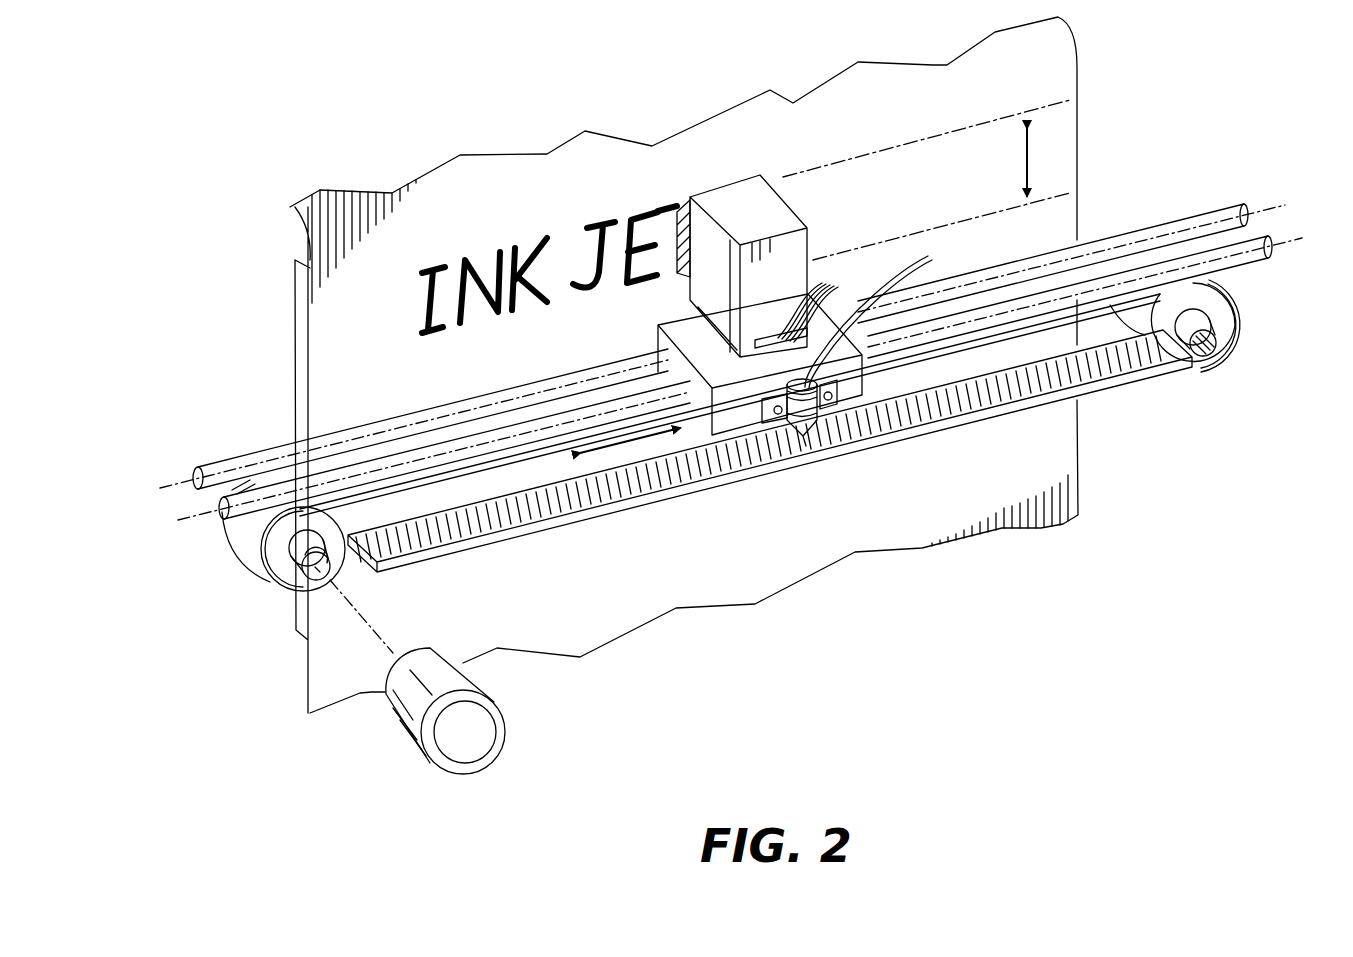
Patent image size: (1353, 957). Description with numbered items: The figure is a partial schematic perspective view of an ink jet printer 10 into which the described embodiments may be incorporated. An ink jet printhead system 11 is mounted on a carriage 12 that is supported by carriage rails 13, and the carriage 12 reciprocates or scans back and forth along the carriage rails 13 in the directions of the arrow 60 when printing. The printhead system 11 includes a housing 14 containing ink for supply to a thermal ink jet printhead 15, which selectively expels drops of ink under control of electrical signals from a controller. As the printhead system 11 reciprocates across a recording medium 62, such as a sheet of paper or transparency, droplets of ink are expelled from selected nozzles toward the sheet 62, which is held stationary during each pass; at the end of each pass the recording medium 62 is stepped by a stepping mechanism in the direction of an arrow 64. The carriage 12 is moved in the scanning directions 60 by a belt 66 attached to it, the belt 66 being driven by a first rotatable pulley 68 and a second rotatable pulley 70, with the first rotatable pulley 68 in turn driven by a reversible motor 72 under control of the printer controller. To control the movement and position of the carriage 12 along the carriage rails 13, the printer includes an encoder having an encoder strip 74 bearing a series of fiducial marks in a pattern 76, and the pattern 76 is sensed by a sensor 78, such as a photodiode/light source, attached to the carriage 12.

The ink jet printer 10 is at (372, 130).
The ink jet printhead system 11 is at (793, 198).
The carriage 12 is at (683, 323).
The carriage rails 13 is at (378, 468).
The housing 14 is at (740, 190).
The thermal ink jet printhead 15 is at (686, 206).
The arrow (scanning directions) 60 is at (637, 450).
The recording medium 62 is at (485, 160).
The arrow (stepping direction) 64 is at (1022, 160).
The belt 66 is at (246, 545).
The first rotatable pulley 68 is at (290, 578).
The second rotatable pulley 70 is at (1226, 325).
The reversible motor 72 is at (478, 745).
The encoder strip 74 is at (1193, 386).
The pattern 76 is at (1128, 362).
The sensor 78 is at (806, 440).